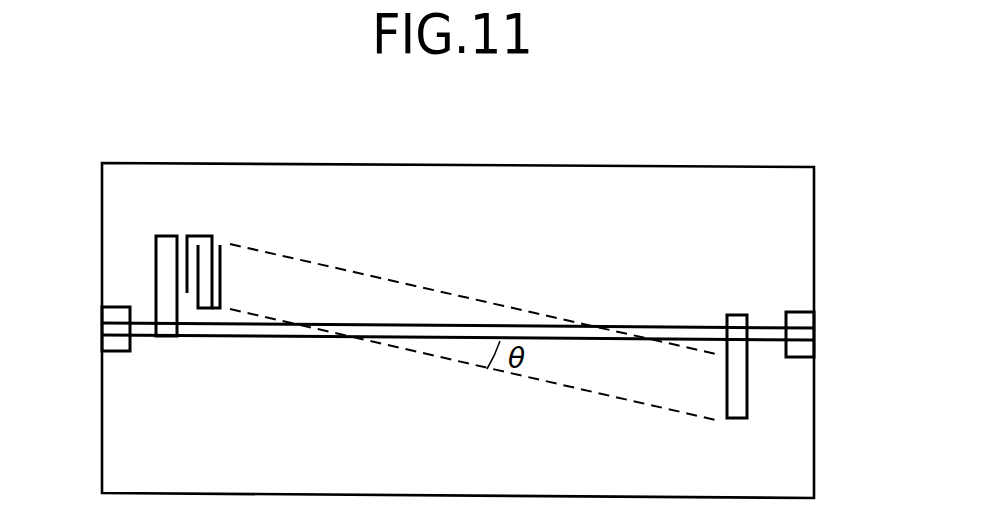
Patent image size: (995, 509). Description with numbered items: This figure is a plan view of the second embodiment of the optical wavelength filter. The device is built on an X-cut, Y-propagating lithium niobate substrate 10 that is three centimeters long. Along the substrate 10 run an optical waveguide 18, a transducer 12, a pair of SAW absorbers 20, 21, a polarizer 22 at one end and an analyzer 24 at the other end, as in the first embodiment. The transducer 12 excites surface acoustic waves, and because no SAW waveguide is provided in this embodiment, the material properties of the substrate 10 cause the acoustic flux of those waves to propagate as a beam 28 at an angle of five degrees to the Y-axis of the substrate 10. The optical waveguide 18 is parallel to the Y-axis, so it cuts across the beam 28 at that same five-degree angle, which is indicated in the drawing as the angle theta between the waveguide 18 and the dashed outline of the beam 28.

The substrate 10 is at (805, 443).
The transducer 12 is at (210, 308).
The optical waveguide 18 is at (765, 330).
The SAW absorber 20 is at (167, 240).
The SAW absorber 21 is at (741, 412).
The polarizer 22 is at (110, 343).
The analyzer 24 is at (805, 318).
The beam 28 is at (436, 290).